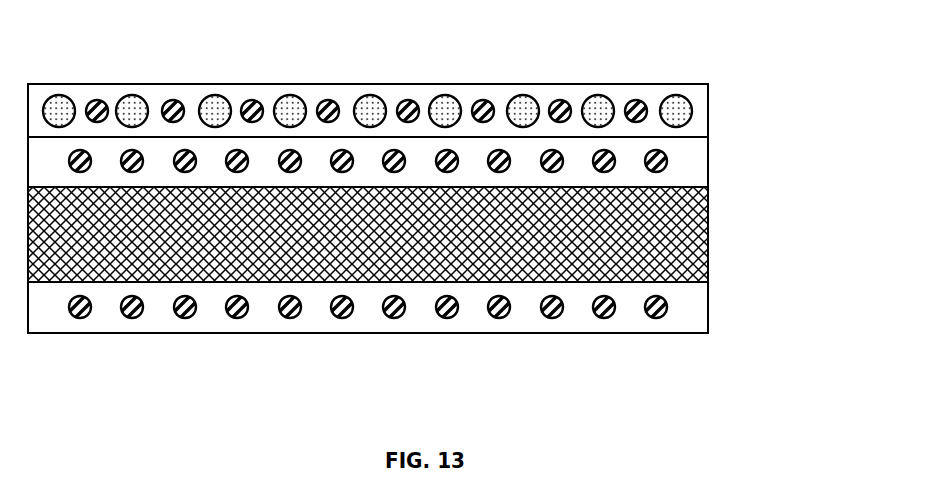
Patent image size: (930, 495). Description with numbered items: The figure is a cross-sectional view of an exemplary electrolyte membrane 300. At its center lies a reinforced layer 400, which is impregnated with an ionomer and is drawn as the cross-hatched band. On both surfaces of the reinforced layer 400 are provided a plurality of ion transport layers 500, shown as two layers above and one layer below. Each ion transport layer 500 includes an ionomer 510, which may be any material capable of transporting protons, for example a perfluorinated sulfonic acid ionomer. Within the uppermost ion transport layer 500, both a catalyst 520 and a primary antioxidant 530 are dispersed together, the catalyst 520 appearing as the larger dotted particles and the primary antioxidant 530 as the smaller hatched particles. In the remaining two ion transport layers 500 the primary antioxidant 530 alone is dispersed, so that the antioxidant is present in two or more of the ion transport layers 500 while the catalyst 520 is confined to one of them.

The electrolyte membrane 300 is at (83, 62).
The reinforced layer 400 is at (710, 225).
The ion transport layer 500 is at (710, 112).
The ionomer 510 is at (395, 97).
The catalyst 520 is at (523, 97).
The primary antioxidant 530 is at (253, 98).